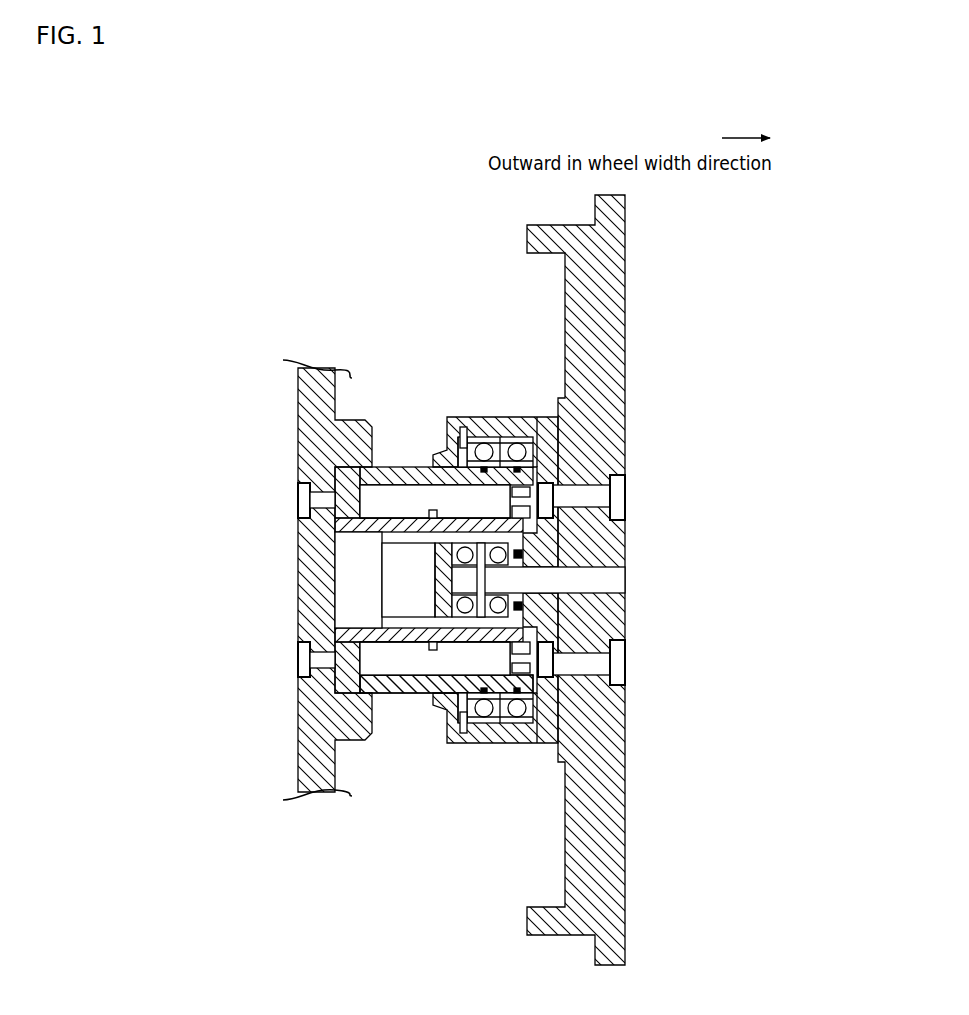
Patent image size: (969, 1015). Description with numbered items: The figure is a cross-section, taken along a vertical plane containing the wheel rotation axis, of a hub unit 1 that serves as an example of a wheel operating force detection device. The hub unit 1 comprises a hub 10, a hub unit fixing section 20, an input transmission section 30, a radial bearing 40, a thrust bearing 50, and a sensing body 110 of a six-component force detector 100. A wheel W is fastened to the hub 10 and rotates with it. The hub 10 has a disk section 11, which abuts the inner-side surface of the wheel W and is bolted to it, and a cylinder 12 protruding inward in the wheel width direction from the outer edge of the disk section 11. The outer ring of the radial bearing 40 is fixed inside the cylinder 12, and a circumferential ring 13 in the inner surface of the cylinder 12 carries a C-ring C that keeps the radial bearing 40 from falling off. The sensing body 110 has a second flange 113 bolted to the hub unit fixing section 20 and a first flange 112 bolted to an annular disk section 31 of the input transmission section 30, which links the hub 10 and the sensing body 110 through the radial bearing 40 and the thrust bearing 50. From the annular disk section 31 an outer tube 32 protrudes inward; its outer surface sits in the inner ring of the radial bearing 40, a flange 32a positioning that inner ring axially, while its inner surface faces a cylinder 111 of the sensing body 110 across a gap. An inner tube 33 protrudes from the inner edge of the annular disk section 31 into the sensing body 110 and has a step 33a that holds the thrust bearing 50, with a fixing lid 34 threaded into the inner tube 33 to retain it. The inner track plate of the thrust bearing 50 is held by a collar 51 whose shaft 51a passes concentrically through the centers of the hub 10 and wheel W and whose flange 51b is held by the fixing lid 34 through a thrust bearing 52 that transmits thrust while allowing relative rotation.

The hub unit 1 is at (255, 285).
The wheel W is at (625, 340).
The hub 10 is at (513, 415).
The disk section 11 is at (580, 476).
The cylinder 12 is at (527, 422).
The circumferential ring 13 is at (468, 425).
The C-ring C is at (463, 435).
The hub unit fixing section 20 is at (298, 398).
The input transmission section 30 is at (390, 700).
The annular disk section 31 is at (560, 660).
The outer tube 32 is at (500, 680).
The flange 32a is at (452, 695).
The inner tube 33 is at (415, 618).
The step 33a is at (523, 555).
The fixing lid 34 is at (435, 603).
The radial bearing 40 is at (517, 720).
The thrust bearing 50 is at (545, 630).
The collar 51 is at (452, 550).
The shaft 51a is at (600, 580).
The flange 51b is at (462, 575).
The thrust bearing 52 is at (433, 517).
The six-component force detector 100 is at (410, 497).
The sensing body 110 is at (435, 580).
The cylinder 111 is at (435, 516).
The first flange 112 is at (522, 515).
The second flange 113 is at (340, 483).